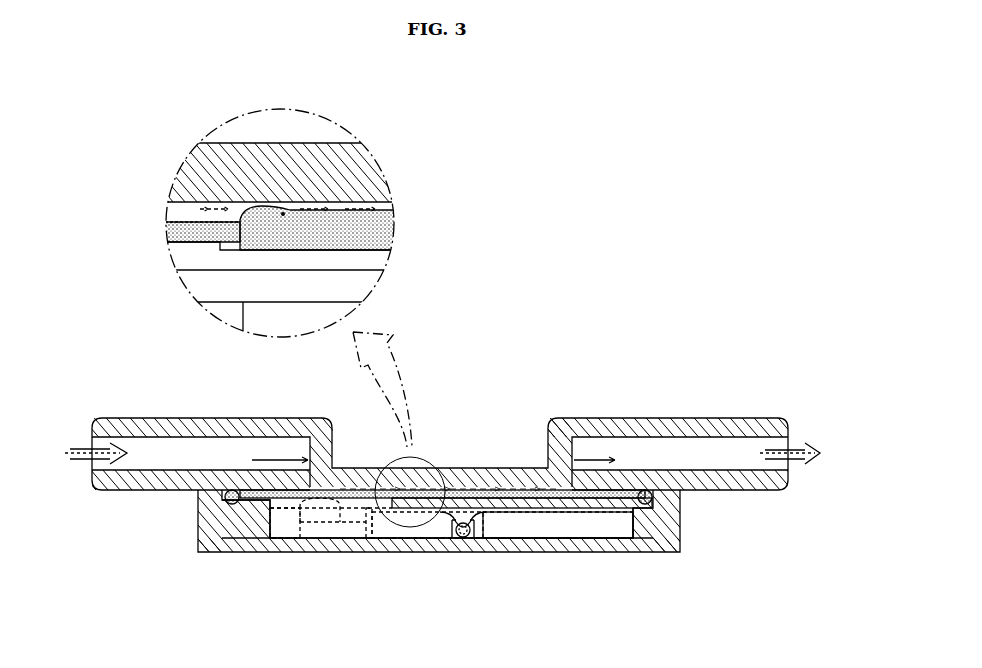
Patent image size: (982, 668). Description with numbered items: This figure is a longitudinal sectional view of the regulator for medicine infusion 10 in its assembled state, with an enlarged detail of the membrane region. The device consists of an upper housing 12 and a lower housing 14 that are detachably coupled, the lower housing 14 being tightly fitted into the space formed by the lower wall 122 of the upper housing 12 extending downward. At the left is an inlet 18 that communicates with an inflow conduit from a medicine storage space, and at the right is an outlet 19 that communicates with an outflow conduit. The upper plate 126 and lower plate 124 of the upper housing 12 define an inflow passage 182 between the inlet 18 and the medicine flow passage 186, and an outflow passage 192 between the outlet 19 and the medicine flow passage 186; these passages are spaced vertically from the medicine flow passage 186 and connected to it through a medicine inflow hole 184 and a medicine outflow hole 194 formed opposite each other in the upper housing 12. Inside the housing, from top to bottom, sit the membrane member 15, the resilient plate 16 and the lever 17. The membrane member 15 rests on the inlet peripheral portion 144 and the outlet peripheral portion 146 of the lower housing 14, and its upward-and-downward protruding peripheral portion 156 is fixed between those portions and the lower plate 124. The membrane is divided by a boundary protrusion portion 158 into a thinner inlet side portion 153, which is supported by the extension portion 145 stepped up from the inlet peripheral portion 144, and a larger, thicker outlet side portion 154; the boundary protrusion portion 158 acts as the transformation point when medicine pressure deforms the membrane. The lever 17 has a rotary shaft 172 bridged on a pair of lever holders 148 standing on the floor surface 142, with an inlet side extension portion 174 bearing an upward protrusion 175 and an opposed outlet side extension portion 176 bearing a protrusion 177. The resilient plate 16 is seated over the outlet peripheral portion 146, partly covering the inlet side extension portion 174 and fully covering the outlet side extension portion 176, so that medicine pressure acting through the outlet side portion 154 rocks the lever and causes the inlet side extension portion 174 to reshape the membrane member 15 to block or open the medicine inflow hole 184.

The regulator for medicine infusion 10 is at (572, 322).
The upper housing 12 is at (212, 147).
The lower housing 14 is at (587, 557).
The membrane member 15 is at (456, 486).
The resilient plate 16 is at (378, 259).
The lever 17 is at (345, 528).
The inlet 18 is at (91, 441).
The outlet 19 is at (789, 440).
The lower wall 122 is at (202, 522).
The lower plate 124 is at (122, 484).
The upper plate 126 is at (180, 430).
The floor surface 142 is at (380, 540).
The inlet peripheral portion 144 is at (242, 540).
The extension portion 145 is at (274, 540).
The outlet peripheral portion 146 is at (648, 548).
The lever holders 148 is at (455, 538).
The inlet side portion 153 is at (168, 232).
The outlet side portion 154 is at (398, 223).
The peripheral portion 156 is at (224, 501).
The boundary protrusion portion 158 is at (284, 213).
The rotary shaft 172 is at (474, 540).
The inlet side extension portion 174 is at (456, 538).
The protrusion 175 is at (366, 530).
The outlet side extension portion 176 is at (518, 540).
The protrusion 177 is at (534, 542).
The inflow passage 182 is at (163, 452).
The medicine inflow hole 184 is at (297, 475).
The medicine flow passage 186 is at (182, 205).
The outflow passage 192 is at (710, 452).
The medicine outflow hole 194 is at (560, 458).